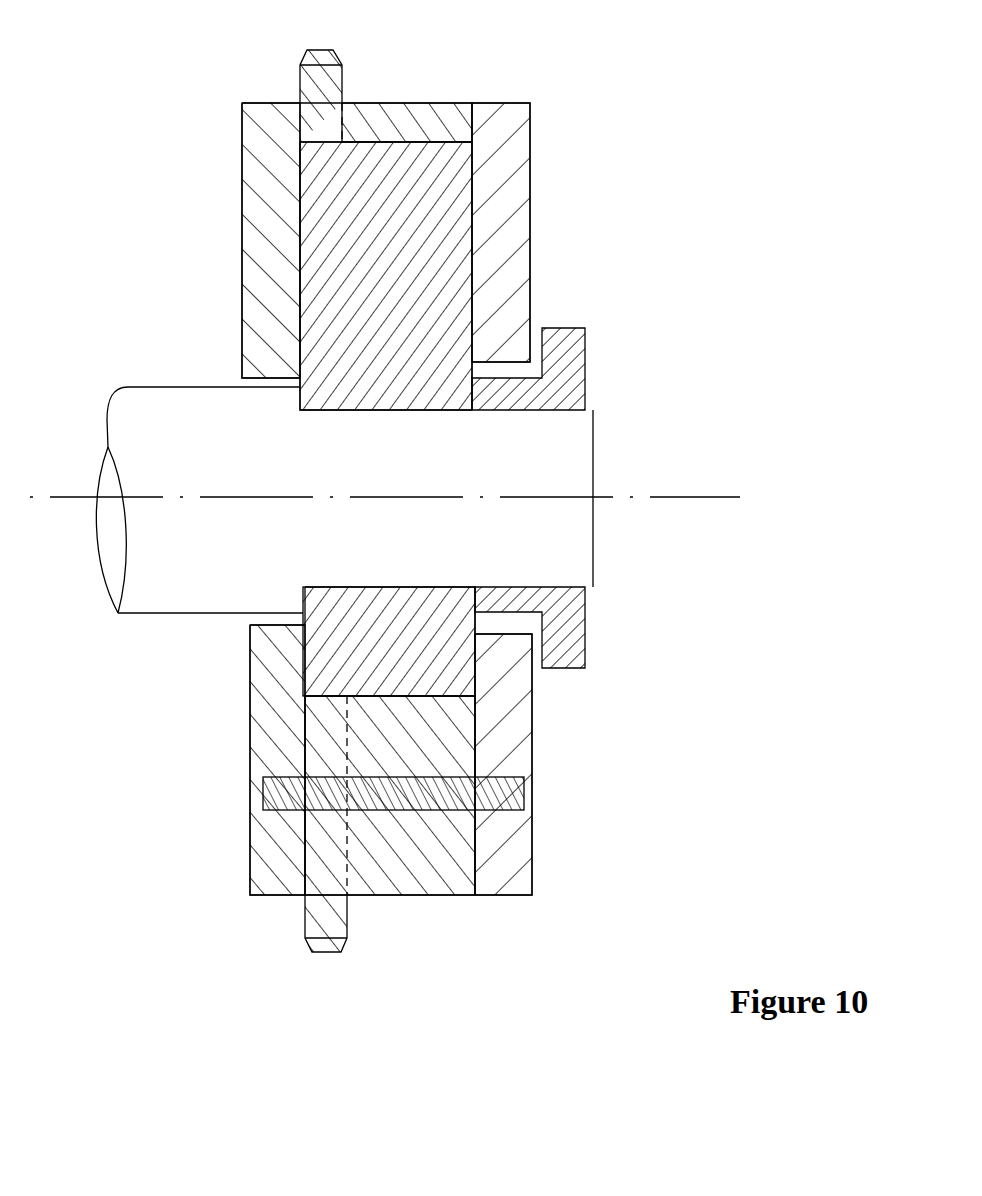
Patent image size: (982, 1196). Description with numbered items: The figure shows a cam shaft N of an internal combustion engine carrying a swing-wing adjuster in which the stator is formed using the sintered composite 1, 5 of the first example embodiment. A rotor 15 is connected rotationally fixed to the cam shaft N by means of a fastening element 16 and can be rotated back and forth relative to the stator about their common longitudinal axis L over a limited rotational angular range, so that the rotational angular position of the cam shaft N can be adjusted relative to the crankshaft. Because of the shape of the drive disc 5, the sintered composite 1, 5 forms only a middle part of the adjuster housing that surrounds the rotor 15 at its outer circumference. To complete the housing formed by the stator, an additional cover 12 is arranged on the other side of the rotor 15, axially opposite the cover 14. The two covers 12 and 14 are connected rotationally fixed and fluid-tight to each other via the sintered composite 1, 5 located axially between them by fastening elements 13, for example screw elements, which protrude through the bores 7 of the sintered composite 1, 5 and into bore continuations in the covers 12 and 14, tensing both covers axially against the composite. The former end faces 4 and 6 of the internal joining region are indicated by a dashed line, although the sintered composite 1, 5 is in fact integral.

The sintered composite 1 is at (393, 112).
The end face 4 is at (360, 844).
The drive disc 5 is at (323, 85).
The end face 6 is at (343, 842).
The bore 7 is at (415, 772).
The cover 12 is at (255, 167).
The fastening element 13 is at (510, 792).
The cover 14 is at (527, 135).
The rotor 15 is at (455, 262).
The fastening element 16 is at (580, 350).
The cam shaft N is at (575, 440).
The longitudinal axis L is at (692, 497).